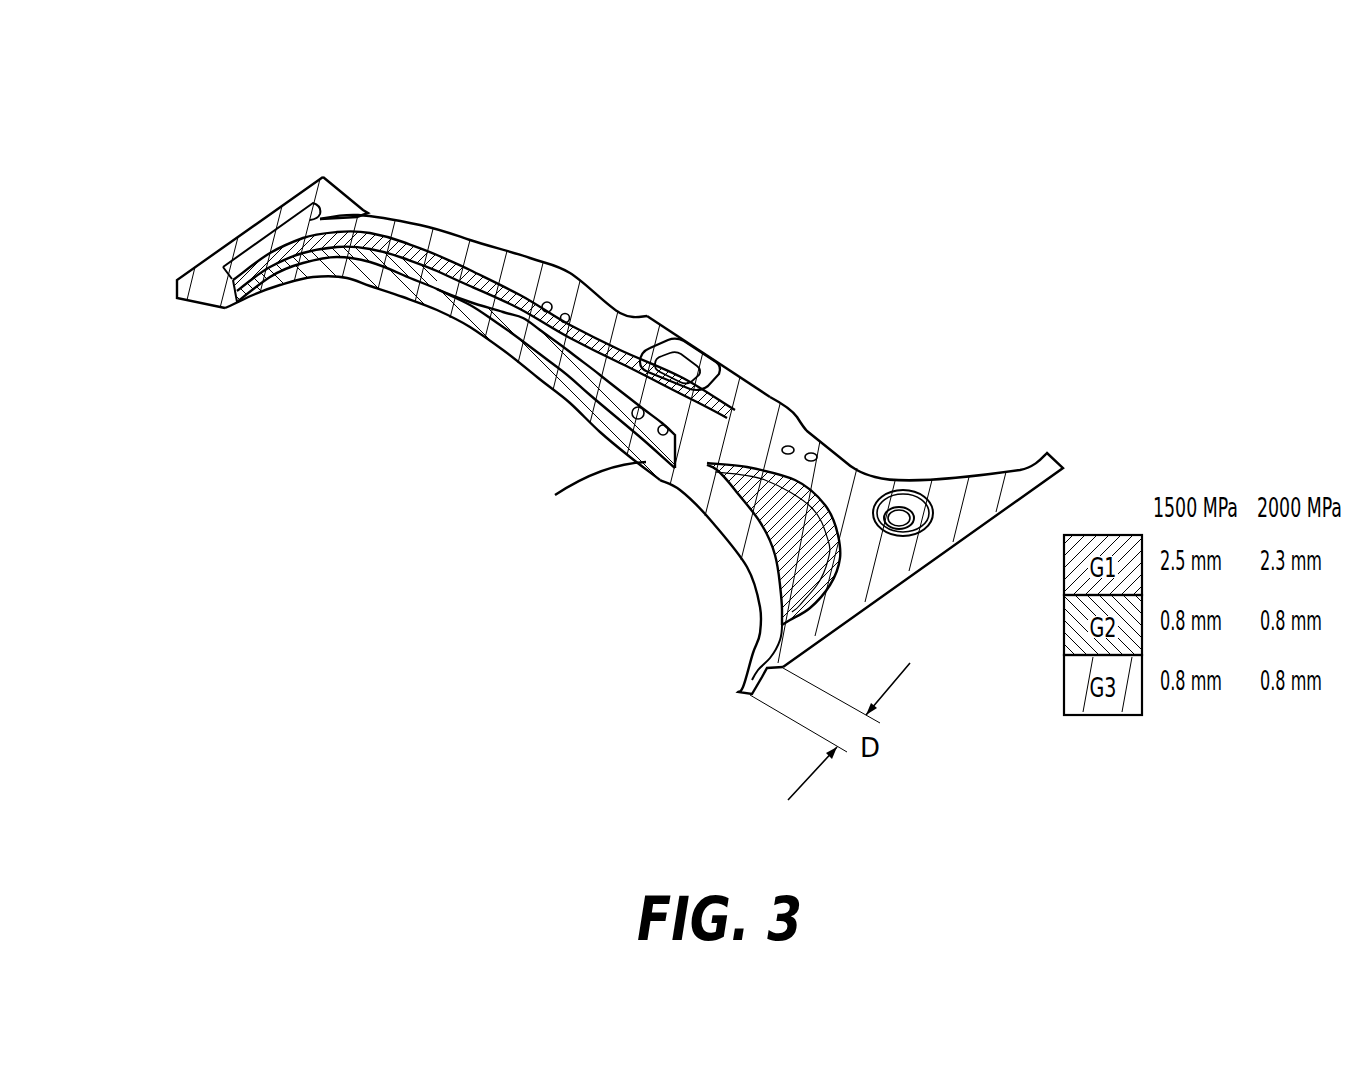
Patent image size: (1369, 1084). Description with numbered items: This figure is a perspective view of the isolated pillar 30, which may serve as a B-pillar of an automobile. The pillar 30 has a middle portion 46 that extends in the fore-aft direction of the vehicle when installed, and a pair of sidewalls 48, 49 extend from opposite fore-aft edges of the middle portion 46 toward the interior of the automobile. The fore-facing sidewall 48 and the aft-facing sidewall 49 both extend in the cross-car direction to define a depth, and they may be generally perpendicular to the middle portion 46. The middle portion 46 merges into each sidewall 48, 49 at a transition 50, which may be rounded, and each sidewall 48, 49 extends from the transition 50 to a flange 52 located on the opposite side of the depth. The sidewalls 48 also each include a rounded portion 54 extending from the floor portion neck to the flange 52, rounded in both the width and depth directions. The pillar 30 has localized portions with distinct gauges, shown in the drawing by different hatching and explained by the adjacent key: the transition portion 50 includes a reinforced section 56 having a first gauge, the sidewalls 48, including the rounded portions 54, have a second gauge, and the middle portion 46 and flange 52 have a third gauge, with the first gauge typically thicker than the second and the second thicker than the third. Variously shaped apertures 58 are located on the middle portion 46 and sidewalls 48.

The pillar 30 is at (104, 165).
The middle portion 46 is at (462, 245).
The fore-facing sidewall 48 is at (597, 403).
The aft-facing sidewall 49 is at (723, 365).
The transition 50 is at (602, 353).
The flange 52 is at (645, 463).
The rounded portion 54 is at (772, 508).
The reinforced section 56 is at (332, 240).
The apertures 58 is at (672, 362).